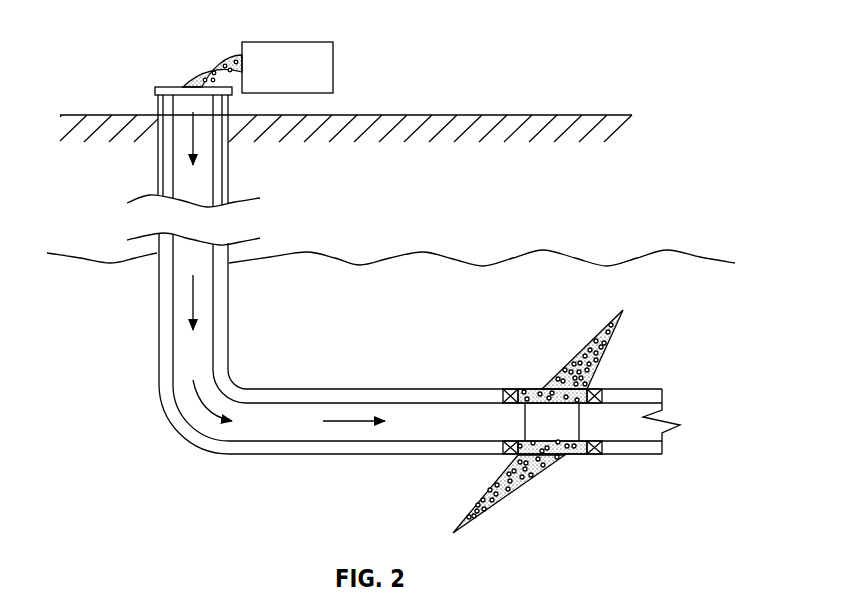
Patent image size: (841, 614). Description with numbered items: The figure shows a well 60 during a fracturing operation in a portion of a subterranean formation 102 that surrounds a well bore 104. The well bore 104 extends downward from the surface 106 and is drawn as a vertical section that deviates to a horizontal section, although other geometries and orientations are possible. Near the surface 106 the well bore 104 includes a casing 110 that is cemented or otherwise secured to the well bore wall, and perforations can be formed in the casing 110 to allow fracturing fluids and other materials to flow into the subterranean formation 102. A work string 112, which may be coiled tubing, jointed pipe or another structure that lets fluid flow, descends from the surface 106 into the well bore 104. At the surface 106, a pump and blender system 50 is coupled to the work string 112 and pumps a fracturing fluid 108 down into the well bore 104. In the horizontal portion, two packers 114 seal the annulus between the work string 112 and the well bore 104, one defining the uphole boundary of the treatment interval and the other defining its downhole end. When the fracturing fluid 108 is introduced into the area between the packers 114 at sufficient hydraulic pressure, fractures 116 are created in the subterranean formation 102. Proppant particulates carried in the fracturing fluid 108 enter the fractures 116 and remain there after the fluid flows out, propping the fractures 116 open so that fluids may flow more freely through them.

The pump and blender system 50 is at (310, 80).
The fracturing fluid 108 is at (208, 62).
The surface 106 is at (488, 115).
The well bore 104 is at (162, 174).
The casing 110 is at (223, 182).
The subterranean formation 102 is at (417, 288).
The work string 112 is at (159, 328).
The well 60 is at (176, 446).
The fractures 116 is at (534, 345).
The packers 114 is at (512, 389).